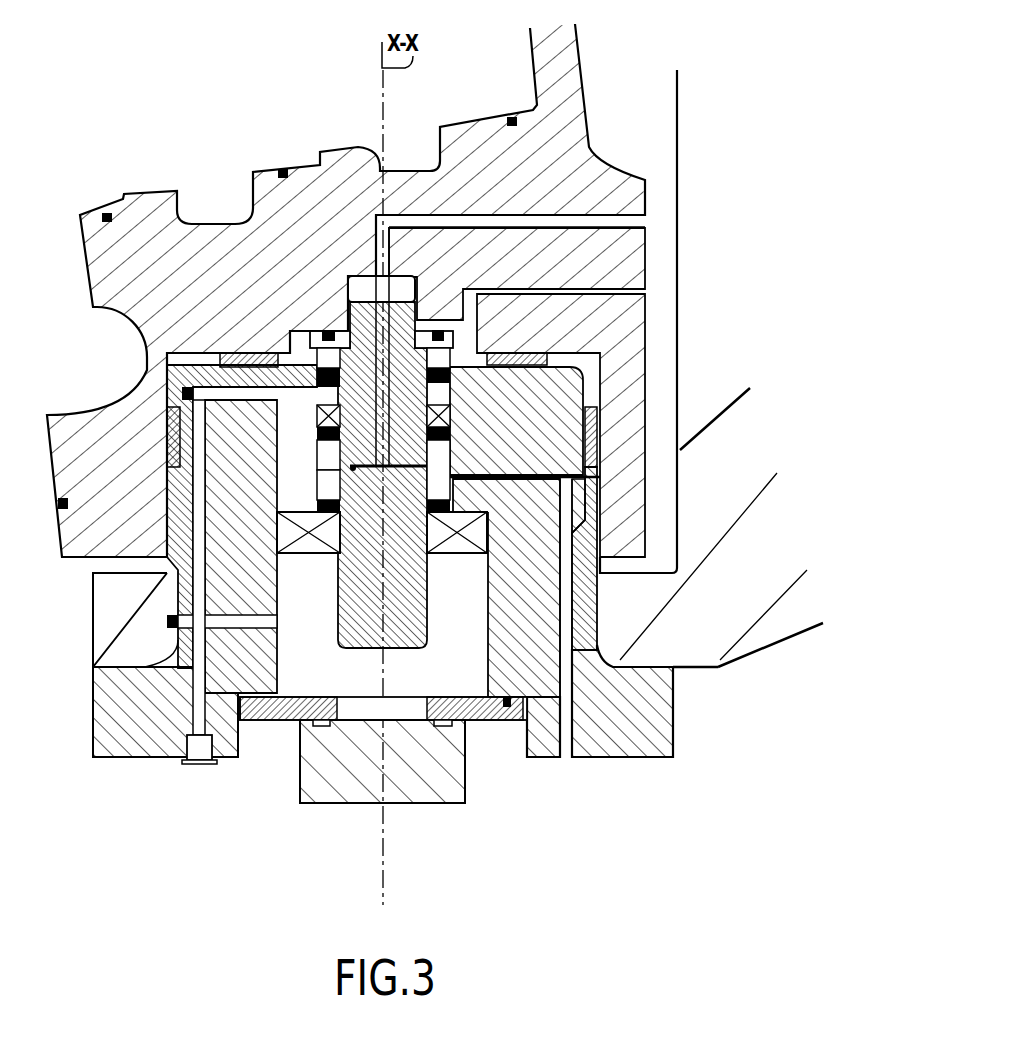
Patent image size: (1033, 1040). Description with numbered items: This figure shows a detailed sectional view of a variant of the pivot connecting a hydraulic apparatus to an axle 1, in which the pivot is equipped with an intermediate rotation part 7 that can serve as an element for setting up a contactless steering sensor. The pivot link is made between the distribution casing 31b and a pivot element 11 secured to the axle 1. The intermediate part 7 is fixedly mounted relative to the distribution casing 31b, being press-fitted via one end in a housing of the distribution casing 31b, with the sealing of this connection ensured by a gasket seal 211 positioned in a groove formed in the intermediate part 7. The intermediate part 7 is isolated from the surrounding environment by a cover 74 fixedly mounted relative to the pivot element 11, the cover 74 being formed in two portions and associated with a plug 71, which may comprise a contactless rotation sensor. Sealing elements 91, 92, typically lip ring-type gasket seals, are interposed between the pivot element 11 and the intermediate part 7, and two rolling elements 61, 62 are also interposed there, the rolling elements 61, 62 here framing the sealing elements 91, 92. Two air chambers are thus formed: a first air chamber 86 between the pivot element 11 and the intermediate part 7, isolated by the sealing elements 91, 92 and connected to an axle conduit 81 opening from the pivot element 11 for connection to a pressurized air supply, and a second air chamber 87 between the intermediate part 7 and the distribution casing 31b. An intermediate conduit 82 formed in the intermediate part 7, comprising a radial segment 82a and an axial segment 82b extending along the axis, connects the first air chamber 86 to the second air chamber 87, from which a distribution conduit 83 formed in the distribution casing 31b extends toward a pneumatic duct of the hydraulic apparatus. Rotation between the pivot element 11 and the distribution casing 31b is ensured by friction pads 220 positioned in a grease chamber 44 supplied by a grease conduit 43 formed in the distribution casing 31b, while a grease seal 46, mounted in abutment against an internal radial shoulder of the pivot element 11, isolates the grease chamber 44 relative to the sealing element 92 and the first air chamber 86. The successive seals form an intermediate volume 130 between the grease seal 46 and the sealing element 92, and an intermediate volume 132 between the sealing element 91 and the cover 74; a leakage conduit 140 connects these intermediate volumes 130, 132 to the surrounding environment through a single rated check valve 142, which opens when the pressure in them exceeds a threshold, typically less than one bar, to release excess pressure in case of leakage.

The axle 1 is at (723, 630).
The intermediate rotation part 7 is at (420, 568).
The pivot element 11 is at (648, 735).
The distribution casing 31b is at (186, 240).
The grease conduit 43 is at (557, 288).
The grease chamber 44 is at (477, 353).
The grease seal 46 is at (342, 380).
The rolling element 61 is at (323, 553).
The rolling element 62 is at (335, 428).
The plug 71 is at (465, 797).
The cover 74 is at (470, 713).
The axle conduit 81 is at (565, 757).
The intermediate conduit 82 is at (245, 435).
The radial segment 82a is at (340, 480).
The axial segment 82b is at (340, 445).
The distribution conduit 83 is at (517, 224).
The first air chamber 86 is at (443, 452).
The second air chamber 87 is at (362, 290).
The sealing element 91 is at (450, 507).
The sealing element 92 is at (450, 427).
The intermediate volume 130 is at (433, 390).
The intermediate volume 132 is at (322, 671).
The leakage conduit 140 is at (200, 688).
The rated check valve 142 is at (199, 748).
The gasket seal 211 is at (327, 327).
The friction pads 220 is at (253, 353).